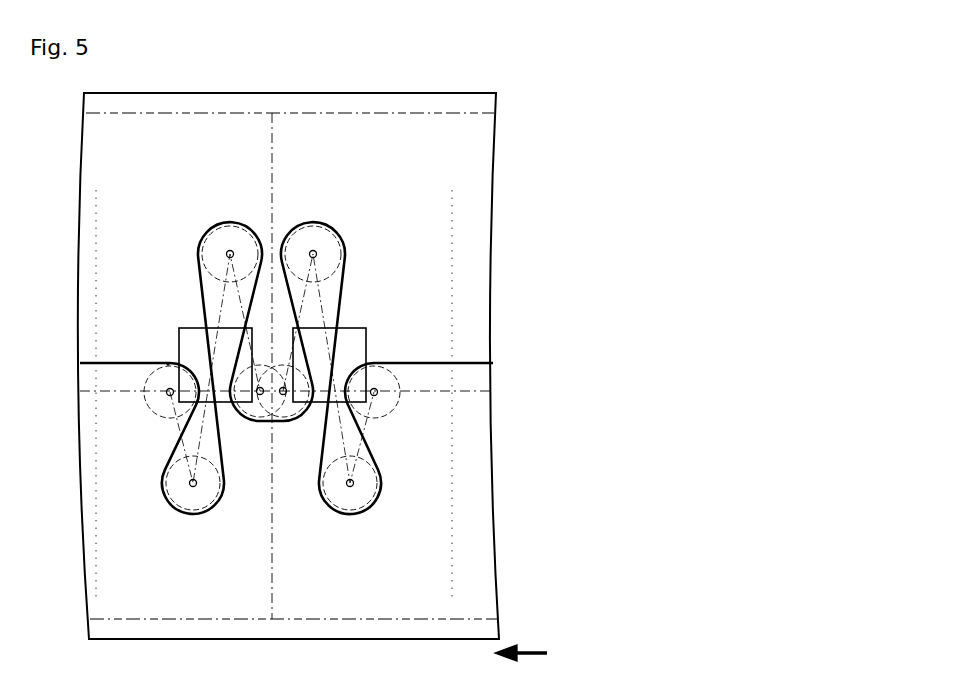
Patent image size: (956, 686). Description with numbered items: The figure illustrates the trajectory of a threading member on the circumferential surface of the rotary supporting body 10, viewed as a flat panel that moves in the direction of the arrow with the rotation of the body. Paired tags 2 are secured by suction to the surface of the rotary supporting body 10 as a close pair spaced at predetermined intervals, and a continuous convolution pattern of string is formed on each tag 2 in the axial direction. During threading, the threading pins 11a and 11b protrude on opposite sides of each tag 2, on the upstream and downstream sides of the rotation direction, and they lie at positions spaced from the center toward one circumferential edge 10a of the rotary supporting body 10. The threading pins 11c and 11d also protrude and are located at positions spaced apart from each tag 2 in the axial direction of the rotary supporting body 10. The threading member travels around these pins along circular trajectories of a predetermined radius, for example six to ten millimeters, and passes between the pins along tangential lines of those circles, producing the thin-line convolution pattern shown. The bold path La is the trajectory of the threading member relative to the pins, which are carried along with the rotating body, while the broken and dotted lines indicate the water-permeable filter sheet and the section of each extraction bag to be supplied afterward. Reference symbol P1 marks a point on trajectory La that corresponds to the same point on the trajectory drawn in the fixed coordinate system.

The tag 2 is at (364, 327).
The rotary supporting body 10 is at (462, 641).
The circumferential edge 10a is at (313, 641).
The threading pin 11a is at (168, 396).
The threading pin 11b is at (260, 396).
The threading pin 11c is at (192, 488).
The threading pin 11d is at (229, 251).
The trajectory La is at (413, 362).
The point P1 is at (168, 358).